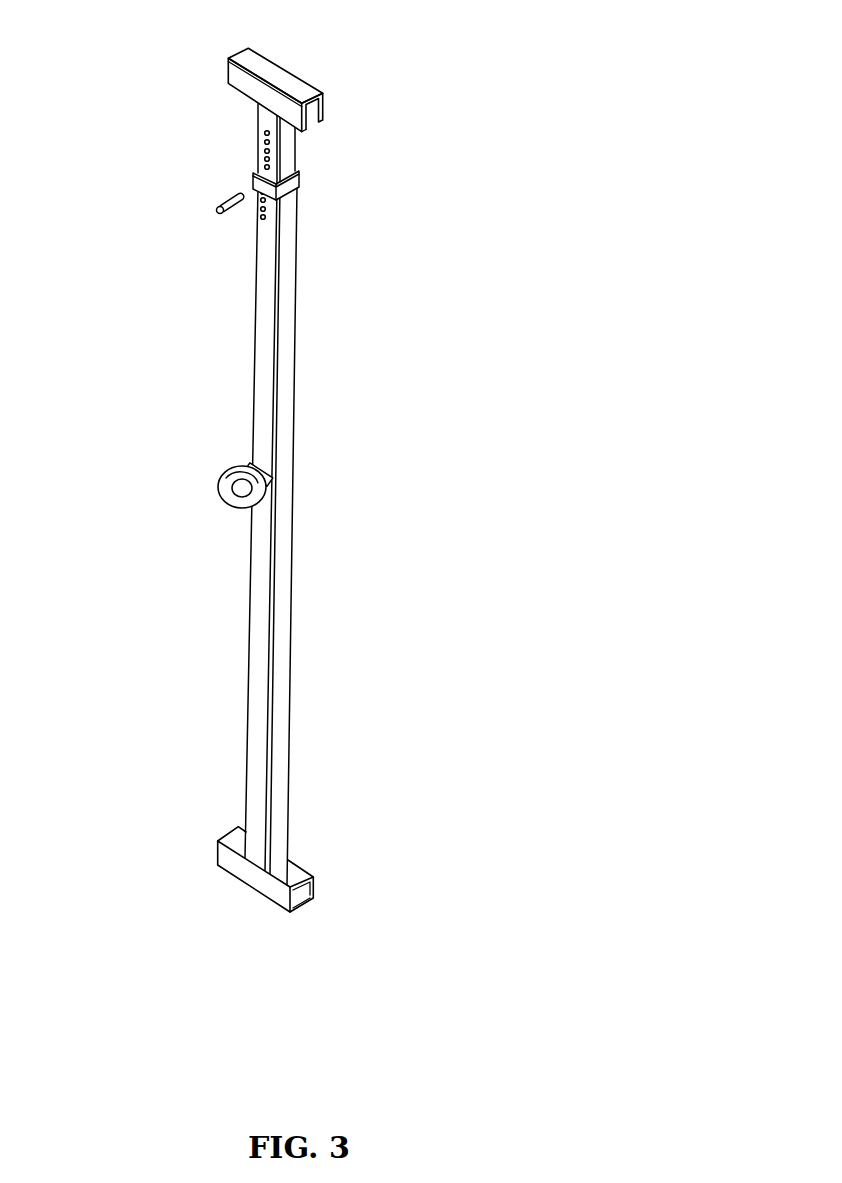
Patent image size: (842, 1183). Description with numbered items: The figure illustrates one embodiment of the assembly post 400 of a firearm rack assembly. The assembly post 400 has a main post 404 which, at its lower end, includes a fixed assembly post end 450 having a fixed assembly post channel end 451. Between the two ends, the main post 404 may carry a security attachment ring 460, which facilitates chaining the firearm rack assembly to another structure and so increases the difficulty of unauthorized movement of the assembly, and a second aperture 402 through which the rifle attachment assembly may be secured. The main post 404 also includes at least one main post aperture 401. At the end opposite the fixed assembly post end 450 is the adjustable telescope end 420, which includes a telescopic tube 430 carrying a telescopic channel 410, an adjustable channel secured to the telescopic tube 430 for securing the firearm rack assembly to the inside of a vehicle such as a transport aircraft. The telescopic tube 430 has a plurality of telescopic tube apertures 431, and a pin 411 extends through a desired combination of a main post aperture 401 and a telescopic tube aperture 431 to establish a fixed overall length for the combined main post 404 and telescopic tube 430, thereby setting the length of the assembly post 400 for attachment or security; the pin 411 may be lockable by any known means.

The assembly post 400 is at (296, 464).
The main post aperture 401 is at (289, 208).
The second aperture 402 is at (285, 313).
The main post 404 is at (292, 549).
The telescopic channel 410 is at (280, 73).
The pin 411 is at (217, 212).
The adjustable telescope end 420 is at (240, 143).
The telescopic tube 430 is at (285, 151).
The telescopic tube apertures 431 is at (258, 140).
The fixed assembly post end 450 is at (266, 842).
The fixed assembly post channel end 451 is at (316, 899).
The security attachment ring 460 is at (220, 490).